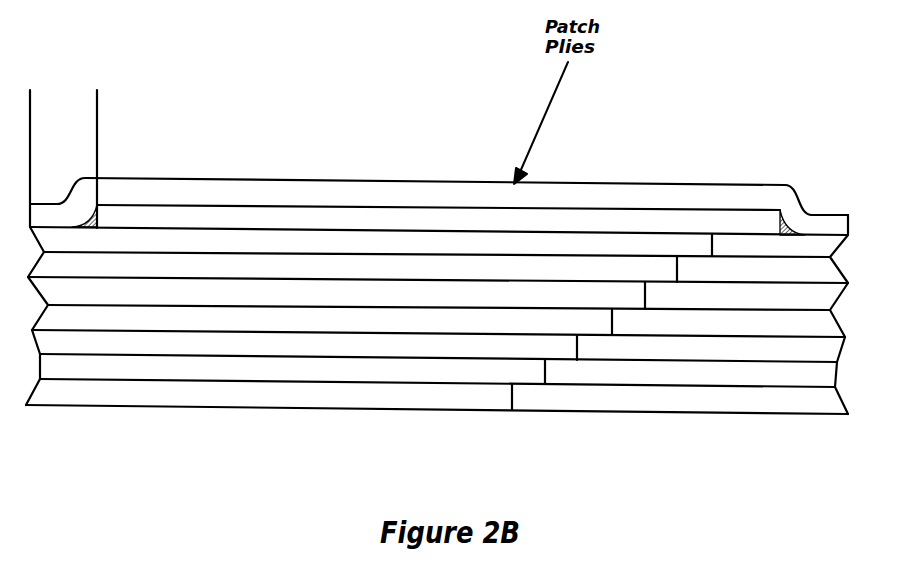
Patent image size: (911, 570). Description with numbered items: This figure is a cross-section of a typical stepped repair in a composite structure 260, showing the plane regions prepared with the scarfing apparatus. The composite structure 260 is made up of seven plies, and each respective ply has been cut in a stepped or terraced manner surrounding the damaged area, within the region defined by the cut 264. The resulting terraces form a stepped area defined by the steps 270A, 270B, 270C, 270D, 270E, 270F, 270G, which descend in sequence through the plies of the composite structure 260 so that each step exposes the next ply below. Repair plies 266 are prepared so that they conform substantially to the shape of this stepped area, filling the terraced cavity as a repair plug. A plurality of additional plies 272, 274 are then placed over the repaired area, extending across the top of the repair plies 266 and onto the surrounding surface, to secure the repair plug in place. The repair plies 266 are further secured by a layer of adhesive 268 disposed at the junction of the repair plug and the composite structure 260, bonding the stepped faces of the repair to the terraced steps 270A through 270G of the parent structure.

The composite structure 260 is at (713, 96).
The cut 264 is at (363, 409).
The repair plies 266 is at (667, 246).
The layer of adhesive 268 is at (512, 410).
The step 270A is at (363, 409).
The step 270B is at (330, 382).
The step 270C is at (297, 357).
The step 270D is at (264, 332).
The step 270E is at (230, 306).
The step 270F is at (199, 278).
The step 270G is at (165, 253).
The additional ply 272 is at (755, 225).
The additional ply 274 is at (833, 225).